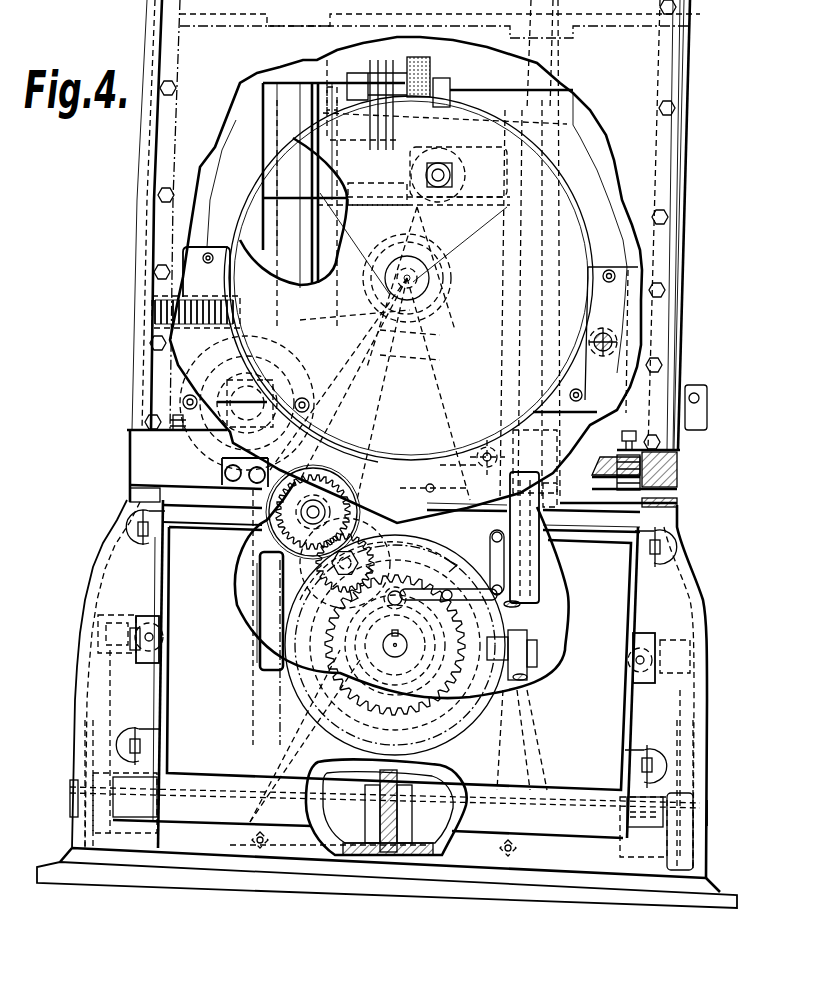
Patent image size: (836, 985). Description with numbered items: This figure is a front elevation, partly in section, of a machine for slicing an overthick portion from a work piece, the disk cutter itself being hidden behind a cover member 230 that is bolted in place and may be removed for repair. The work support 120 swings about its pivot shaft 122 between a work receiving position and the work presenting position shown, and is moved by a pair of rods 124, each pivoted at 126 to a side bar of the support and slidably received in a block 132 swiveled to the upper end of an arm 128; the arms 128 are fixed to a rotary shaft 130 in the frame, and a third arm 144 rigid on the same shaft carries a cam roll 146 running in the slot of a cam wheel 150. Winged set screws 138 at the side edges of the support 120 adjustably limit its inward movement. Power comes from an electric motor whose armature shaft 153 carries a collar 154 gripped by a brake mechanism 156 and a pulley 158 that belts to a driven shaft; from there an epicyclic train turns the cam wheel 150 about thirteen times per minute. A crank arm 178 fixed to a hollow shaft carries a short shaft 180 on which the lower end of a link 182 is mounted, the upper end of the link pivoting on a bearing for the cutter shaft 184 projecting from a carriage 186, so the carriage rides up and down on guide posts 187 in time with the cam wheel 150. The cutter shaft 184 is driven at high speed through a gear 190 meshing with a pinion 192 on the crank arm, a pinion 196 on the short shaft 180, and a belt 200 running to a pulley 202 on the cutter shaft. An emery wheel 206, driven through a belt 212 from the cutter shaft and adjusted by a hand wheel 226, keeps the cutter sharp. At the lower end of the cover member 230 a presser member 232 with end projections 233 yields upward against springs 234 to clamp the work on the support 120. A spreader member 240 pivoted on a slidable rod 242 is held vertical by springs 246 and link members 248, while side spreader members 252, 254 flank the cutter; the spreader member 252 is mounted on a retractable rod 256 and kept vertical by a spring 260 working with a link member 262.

The work support 120 is at (177, 563).
The pivot shaft 122 is at (113, 797).
The rods 124 is at (150, 658).
The pivot 126 is at (135, 640).
The arms 128 is at (113, 693).
The rotary shaft 130 is at (423, 810).
The block 132 is at (153, 620).
The winged set screws 138 is at (148, 530).
The third arm 144 is at (530, 652).
The cam roll 146 is at (520, 618).
The cam wheel 150 is at (443, 550).
The armature shaft 153 is at (241, 387).
The collar 154 is at (237, 442).
The brake mechanism 156 is at (209, 300).
The pulley 158 is at (247, 403).
The crank arm 178 is at (380, 573).
The short shaft 180 is at (310, 513).
The link 182 is at (430, 337).
The shaft 184 is at (425, 262).
The carriage 186 is at (293, 187).
The guide posts 187 is at (287, 68).
The gear 190 is at (345, 648).
The pinion 192 is at (331, 586).
The pinion 196 is at (331, 564).
The belt 200 is at (430, 360).
The pulley 202 is at (448, 288).
The emery wheel 206 is at (433, 70).
The belt 212 is at (423, 212).
The hand wheel 226 is at (455, 170).
The cover member 230 is at (645, 143).
The presser member 232 is at (660, 478).
The projection 233 is at (665, 497).
The spring 234 is at (640, 458).
The spreader member 240 is at (470, 452).
The rod 242 is at (480, 458).
The springs 246 is at (575, 427).
The link members 248 is at (430, 488).
The spreader member 252 is at (598, 267).
The spreader member 254 is at (227, 247).
The retractable rod 256 is at (607, 357).
The spring 260 is at (611, 282).
The link member 262 is at (571, 394).